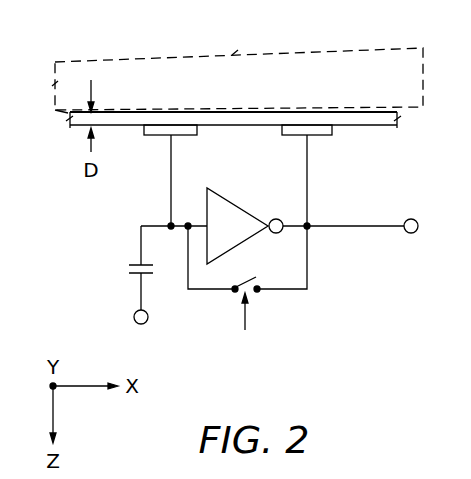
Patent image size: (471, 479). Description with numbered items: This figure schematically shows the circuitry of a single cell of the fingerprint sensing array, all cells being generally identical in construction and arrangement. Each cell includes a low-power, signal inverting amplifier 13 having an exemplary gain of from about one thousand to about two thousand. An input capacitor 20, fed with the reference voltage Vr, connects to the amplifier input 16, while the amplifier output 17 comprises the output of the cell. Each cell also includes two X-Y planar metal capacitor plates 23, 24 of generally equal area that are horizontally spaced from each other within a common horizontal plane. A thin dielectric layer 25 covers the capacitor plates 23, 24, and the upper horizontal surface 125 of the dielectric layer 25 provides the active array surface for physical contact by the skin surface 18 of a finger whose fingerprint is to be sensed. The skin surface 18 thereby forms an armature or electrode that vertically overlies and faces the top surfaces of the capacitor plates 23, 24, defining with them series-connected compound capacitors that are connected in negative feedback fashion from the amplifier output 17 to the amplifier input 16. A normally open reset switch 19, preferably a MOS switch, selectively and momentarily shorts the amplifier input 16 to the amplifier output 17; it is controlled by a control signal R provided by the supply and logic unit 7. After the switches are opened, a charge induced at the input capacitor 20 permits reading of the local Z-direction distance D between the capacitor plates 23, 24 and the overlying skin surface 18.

The supply and logic unit 7 is at (248, 340).
The amplifier 13 is at (236, 206).
The amplifier input 16 is at (189, 223).
The amplifier output 17 is at (409, 233).
The skin surface 18 is at (270, 50).
The reset switch 19 is at (255, 280).
The input capacitor 20 is at (131, 268).
The capacitor plate 23 is at (322, 136).
The capacitor plate 24 is at (154, 136).
The dielectric layer 25 is at (376, 126).
The upper surface 125 is at (257, 126).